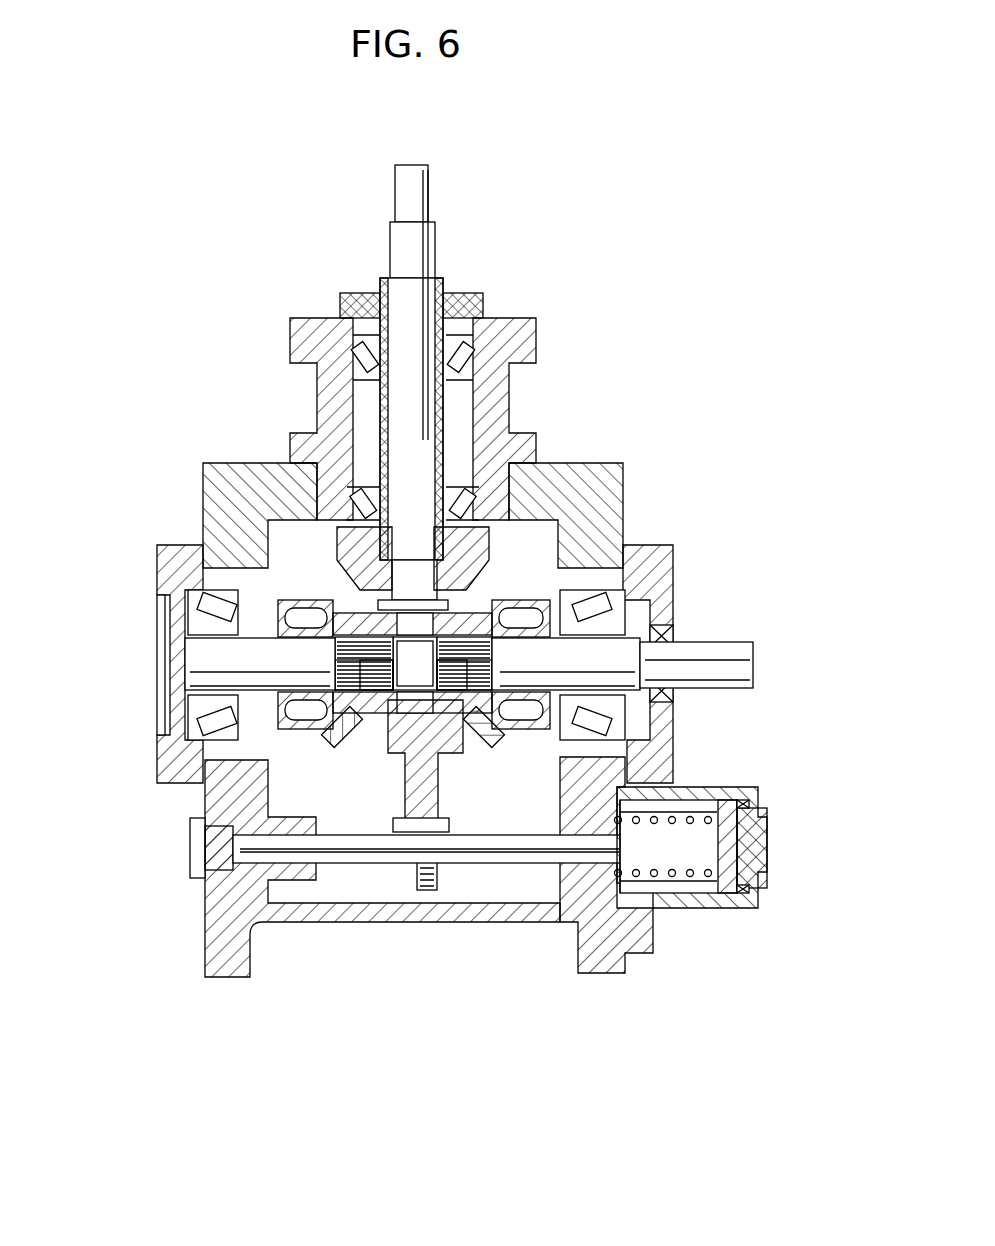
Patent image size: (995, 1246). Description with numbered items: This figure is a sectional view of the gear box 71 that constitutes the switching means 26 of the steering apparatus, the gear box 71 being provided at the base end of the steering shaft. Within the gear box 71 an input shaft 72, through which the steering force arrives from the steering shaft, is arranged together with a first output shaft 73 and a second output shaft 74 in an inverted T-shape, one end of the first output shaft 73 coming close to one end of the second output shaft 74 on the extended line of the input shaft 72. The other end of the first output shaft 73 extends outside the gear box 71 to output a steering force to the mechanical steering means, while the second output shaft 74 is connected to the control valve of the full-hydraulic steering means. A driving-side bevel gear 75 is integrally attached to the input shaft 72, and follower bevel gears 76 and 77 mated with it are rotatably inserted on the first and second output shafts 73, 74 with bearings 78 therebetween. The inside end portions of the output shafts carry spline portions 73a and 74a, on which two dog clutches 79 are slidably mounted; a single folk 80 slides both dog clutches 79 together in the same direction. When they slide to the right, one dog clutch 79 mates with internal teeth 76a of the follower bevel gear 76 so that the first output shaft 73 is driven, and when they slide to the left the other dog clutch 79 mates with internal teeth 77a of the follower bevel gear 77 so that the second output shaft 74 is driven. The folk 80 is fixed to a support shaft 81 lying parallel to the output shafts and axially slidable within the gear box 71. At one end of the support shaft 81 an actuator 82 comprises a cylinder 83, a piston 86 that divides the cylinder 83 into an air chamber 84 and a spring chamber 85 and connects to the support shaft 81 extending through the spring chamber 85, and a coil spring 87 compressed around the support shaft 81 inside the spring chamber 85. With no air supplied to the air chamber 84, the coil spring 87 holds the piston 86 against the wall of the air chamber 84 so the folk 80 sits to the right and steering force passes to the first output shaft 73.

The switching means 26 is at (699, 302).
The gear box 71 is at (627, 512).
The input shaft 72 is at (423, 437).
The first output shaft 73 is at (617, 650).
The spline portion 73a is at (457, 690).
The second output shaft 74 is at (203, 648).
The spline portion 74a is at (378, 742).
The driving-side bevel gear 75 is at (470, 548).
The follower bevel gear 76 is at (472, 727).
The internal teeth 76a is at (497, 693).
The follower bevel gear 77 is at (355, 742).
The internal teeth 77a is at (335, 690).
The bearing 78 is at (213, 475).
The dog clutch 79 is at (268, 485).
The folk 80 is at (403, 742).
The support shaft 81 is at (590, 849).
The actuator 82 is at (703, 918).
The cylinder 83 is at (747, 895).
The air chamber 84 is at (727, 855).
The spring chamber 85 is at (673, 897).
The piston 86 is at (740, 806).
The coil spring 87 is at (683, 812).